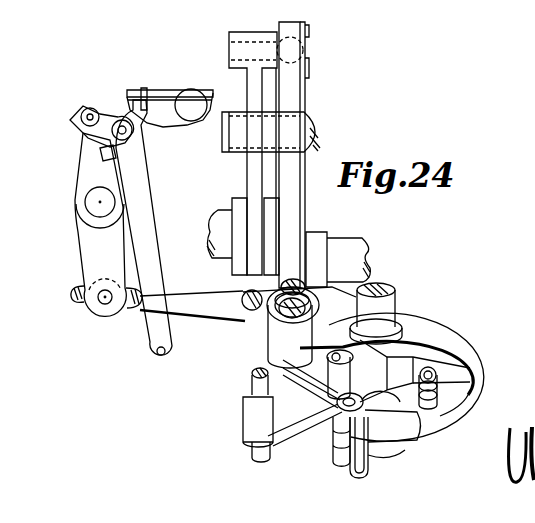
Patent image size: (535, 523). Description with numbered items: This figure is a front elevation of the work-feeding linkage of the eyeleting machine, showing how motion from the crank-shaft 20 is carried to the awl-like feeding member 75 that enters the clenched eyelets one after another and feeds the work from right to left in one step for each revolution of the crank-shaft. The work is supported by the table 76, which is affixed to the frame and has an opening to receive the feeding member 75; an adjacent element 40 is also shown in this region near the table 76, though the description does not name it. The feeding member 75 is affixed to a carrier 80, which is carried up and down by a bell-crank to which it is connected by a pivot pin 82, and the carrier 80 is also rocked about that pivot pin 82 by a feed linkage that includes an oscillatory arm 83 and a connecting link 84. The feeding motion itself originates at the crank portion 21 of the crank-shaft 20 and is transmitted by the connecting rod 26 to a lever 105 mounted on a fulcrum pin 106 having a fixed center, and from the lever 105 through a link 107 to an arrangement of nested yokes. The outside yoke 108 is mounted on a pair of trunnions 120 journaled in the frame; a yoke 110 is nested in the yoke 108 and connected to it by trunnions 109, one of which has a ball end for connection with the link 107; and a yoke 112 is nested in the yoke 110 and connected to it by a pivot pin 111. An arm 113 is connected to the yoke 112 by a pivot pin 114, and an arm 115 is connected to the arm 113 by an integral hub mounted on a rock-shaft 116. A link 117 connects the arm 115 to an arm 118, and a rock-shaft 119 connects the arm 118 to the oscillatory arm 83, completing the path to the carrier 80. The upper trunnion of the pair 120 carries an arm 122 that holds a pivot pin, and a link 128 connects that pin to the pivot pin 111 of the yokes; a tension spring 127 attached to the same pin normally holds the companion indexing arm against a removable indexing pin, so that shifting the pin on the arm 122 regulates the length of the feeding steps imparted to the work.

The crank-shaft 20 is at (360, 243).
The crank portion 21 is at (217, 217).
The connecting rod 26 is at (270, 228).
The plate 40 is at (187, 102).
The feeding member 75 is at (142, 88).
The table 76 is at (155, 90).
The carrier 80 is at (135, 170).
The pivot pin 82 is at (152, 357).
The oscillatory arm 83 is at (87, 168).
The connecting link 84 is at (108, 116).
The lever 105 is at (252, 173).
The fulcrum pin 106 is at (313, 120).
The link 107 is at (303, 88).
The yoke 108 is at (447, 322).
The trunnions 109 is at (304, 295).
The yoke 110 is at (360, 473).
The pivot pin 111 is at (345, 408).
The yoke 112 is at (347, 387).
The arm 113 is at (287, 413).
The pivot pin 114 is at (335, 355).
The arm 115 is at (257, 353).
The rock-shaft 116 is at (252, 380).
The link 117 is at (184, 296).
The arm 118 is at (86, 248).
The rock-shaft 119 is at (92, 202).
The trunnions 120 is at (385, 302).
The arm 122 is at (410, 367).
The tension spring 127 is at (438, 375).
The link 128 is at (403, 420).